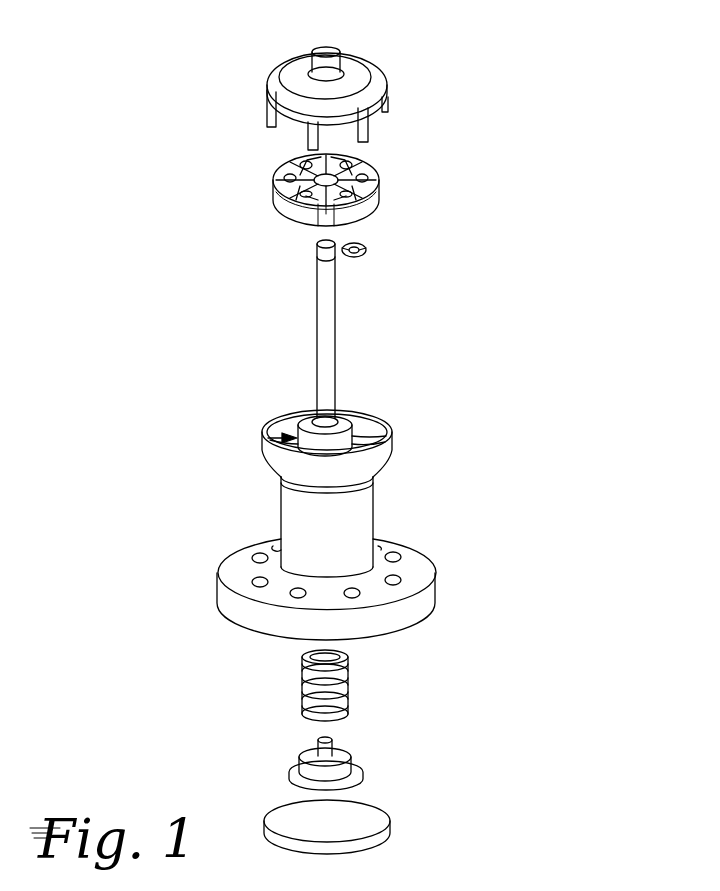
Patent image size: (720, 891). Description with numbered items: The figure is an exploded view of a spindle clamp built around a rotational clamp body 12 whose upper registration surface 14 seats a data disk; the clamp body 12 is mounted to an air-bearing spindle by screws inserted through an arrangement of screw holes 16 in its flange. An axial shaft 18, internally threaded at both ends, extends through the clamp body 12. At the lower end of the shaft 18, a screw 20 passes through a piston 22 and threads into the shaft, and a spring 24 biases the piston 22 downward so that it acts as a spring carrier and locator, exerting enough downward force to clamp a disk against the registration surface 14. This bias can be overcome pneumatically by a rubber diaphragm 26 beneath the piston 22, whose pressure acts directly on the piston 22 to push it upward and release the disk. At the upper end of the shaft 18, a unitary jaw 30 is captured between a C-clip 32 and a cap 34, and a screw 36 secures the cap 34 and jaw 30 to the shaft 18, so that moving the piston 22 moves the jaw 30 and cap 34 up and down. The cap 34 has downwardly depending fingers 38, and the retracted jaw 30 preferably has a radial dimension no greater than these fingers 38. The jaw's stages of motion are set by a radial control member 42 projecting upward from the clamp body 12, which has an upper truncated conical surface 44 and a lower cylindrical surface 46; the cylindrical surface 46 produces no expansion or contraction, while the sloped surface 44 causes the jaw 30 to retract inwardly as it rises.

The rotational clamp body 12 is at (367, 515).
The upper registration surface 14 is at (302, 405).
The screw holes 16 is at (395, 580).
The axial shaft 18 is at (337, 340).
The screw 20 is at (318, 740).
The piston 22 is at (348, 760).
The spring 24 is at (305, 675).
The rubber diaphragm 26 is at (388, 827).
The unitary jaw 30 is at (377, 183).
The C-clip 32 is at (367, 250).
The cap 34 is at (383, 82).
The screw 36 is at (335, 45).
The downwardly depending fingers 38 is at (307, 136).
The radial control member 42 is at (280, 441).
The upper truncated conical surface 44 is at (348, 427).
The lower cylindrical surface 46 is at (384, 442).